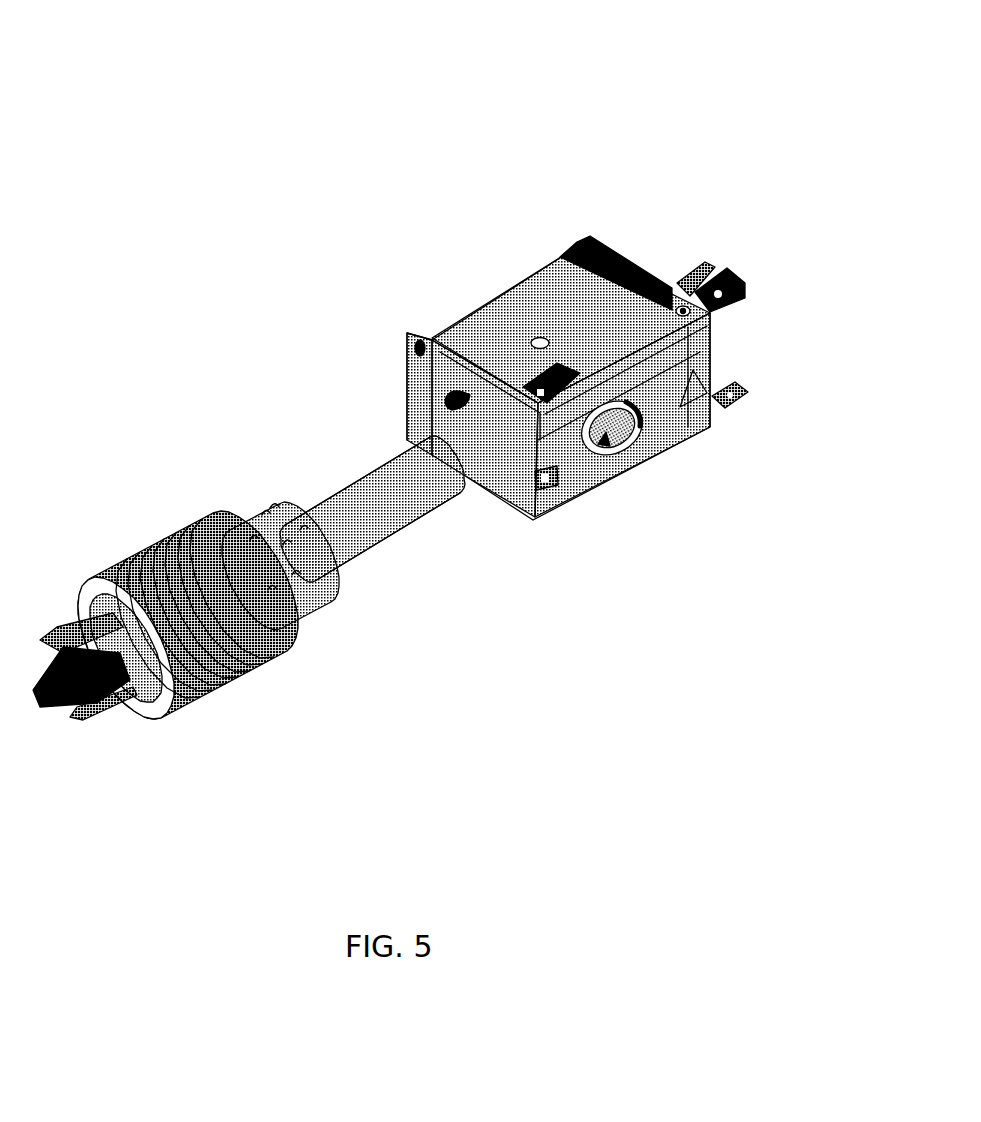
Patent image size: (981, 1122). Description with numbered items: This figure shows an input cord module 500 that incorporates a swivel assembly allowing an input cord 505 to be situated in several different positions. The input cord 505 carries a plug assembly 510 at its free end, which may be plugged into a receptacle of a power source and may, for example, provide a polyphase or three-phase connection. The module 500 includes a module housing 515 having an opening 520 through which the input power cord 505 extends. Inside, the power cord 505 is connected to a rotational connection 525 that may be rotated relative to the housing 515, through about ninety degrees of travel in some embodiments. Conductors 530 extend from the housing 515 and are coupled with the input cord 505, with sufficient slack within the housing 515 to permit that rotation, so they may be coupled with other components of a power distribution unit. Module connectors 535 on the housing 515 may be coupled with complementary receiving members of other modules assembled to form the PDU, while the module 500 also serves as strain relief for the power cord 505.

The input cord module 500 is at (726, 97).
The input cord 505 is at (331, 486).
The plug assembly 510 is at (165, 541).
The module housing 515 is at (472, 317).
The opening 520 is at (541, 482).
The rotational connection 525 is at (575, 477).
The conductors 530 is at (728, 262).
The module connectors 535 is at (748, 288).